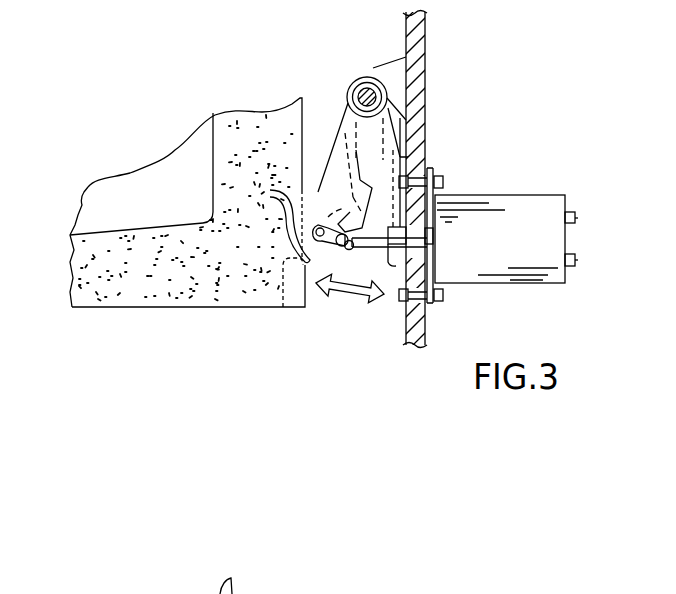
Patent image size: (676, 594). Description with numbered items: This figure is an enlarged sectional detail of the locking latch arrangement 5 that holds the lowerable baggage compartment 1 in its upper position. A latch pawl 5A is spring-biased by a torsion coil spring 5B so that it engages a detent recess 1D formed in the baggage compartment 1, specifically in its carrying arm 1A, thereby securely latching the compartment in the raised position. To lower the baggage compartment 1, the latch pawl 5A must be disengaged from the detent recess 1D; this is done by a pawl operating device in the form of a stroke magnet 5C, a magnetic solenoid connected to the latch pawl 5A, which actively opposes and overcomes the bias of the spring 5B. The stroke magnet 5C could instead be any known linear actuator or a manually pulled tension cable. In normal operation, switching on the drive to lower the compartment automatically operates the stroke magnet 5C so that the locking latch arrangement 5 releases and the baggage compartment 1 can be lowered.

The baggage compartment 1 is at (135, 136).
The carrying arm 1A is at (228, 305).
The detent recess 1D is at (285, 305).
The locking latch arrangement 5 is at (483, 80).
The latch pawl 5A is at (335, 138).
The torsion coil spring 5B is at (400, 114).
The stroke magnet 5C is at (506, 257).